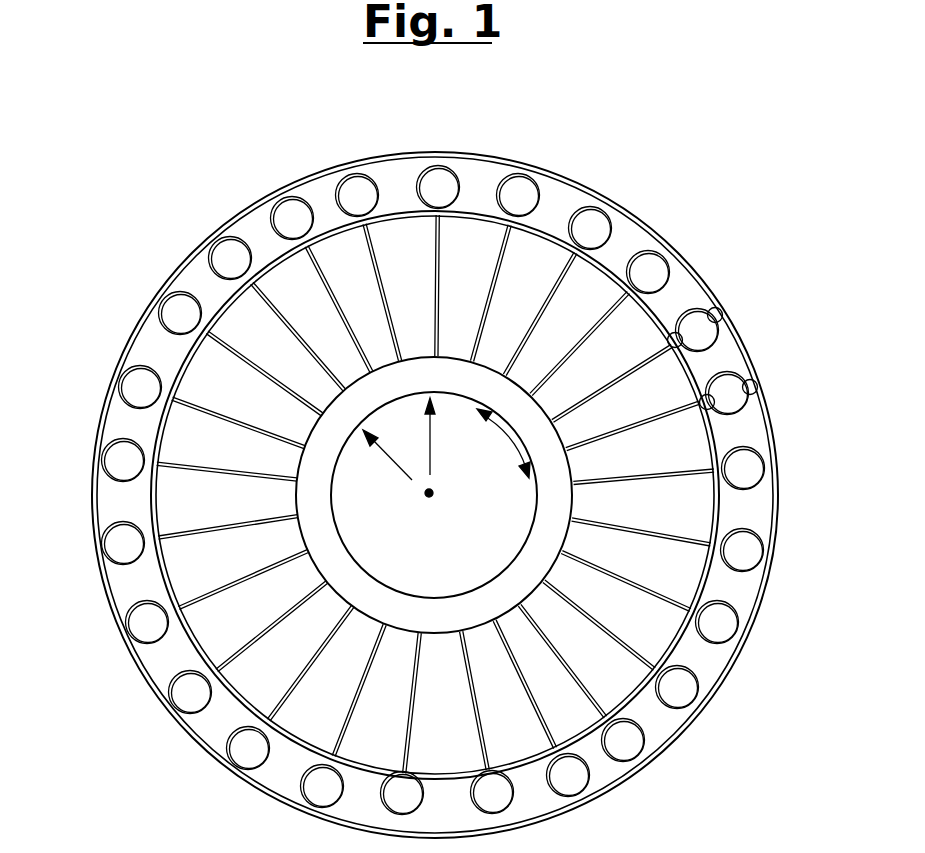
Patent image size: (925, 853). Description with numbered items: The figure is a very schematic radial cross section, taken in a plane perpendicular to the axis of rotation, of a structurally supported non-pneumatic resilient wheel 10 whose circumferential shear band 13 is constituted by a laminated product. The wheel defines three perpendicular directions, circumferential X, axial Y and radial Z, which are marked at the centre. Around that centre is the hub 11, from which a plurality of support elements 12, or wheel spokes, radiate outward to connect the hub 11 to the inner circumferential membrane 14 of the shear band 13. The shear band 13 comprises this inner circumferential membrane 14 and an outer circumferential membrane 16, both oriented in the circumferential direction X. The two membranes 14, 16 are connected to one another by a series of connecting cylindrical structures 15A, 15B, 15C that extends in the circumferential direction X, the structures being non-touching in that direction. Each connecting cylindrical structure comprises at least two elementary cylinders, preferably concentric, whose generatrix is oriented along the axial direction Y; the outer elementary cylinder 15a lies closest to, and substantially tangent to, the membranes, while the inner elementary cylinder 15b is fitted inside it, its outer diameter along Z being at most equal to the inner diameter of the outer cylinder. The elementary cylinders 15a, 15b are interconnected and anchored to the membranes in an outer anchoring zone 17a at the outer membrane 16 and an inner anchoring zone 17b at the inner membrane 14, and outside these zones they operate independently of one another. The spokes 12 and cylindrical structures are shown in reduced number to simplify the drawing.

The non-pneumatic resilient wheel 10 is at (652, 197).
The hub 11 is at (322, 542).
The support elements 12 is at (312, 263).
The shear band 13 is at (435, 470).
The inner circumferential membrane 14 is at (184, 361).
The connecting cylindrical structure 15A is at (374, 183).
The connecting cylindrical structure 15B is at (459, 180).
The connecting cylindrical structure 15C is at (542, 194).
The outer elementary cylinder 15a is at (87, 478).
The inner elementary cylinder 15b is at (123, 469).
The outer circumferential membrane 16 is at (140, 325).
The outer anchoring zone 17a is at (724, 312).
The inner anchoring zone 17b is at (668, 334).
The circumferential direction X is at (507, 432).
The axial direction Y is at (429, 500).
The radial direction Z is at (428, 438).